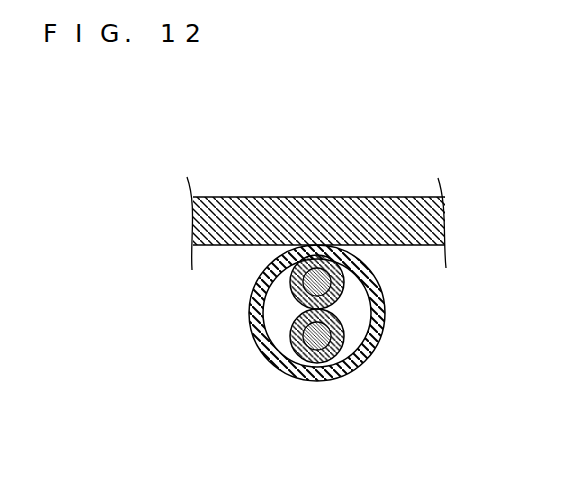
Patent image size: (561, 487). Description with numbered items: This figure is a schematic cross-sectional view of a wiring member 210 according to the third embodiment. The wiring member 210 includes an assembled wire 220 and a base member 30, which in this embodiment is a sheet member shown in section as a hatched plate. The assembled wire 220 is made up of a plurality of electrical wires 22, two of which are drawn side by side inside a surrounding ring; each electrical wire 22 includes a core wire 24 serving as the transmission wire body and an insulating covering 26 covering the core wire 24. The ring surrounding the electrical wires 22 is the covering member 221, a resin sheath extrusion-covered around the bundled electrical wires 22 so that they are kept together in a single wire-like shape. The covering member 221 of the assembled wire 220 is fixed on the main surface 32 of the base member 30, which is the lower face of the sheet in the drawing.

The wiring member 210 is at (325, 168).
The base member 30 is at (438, 212).
The main surface 32 is at (422, 245).
The assembled wire 220 is at (353, 370).
The covering member 221 is at (372, 357).
The electrical wire 22 is at (343, 283).
The core wire 24 is at (302, 290).
The insulating covering 26 is at (292, 275).